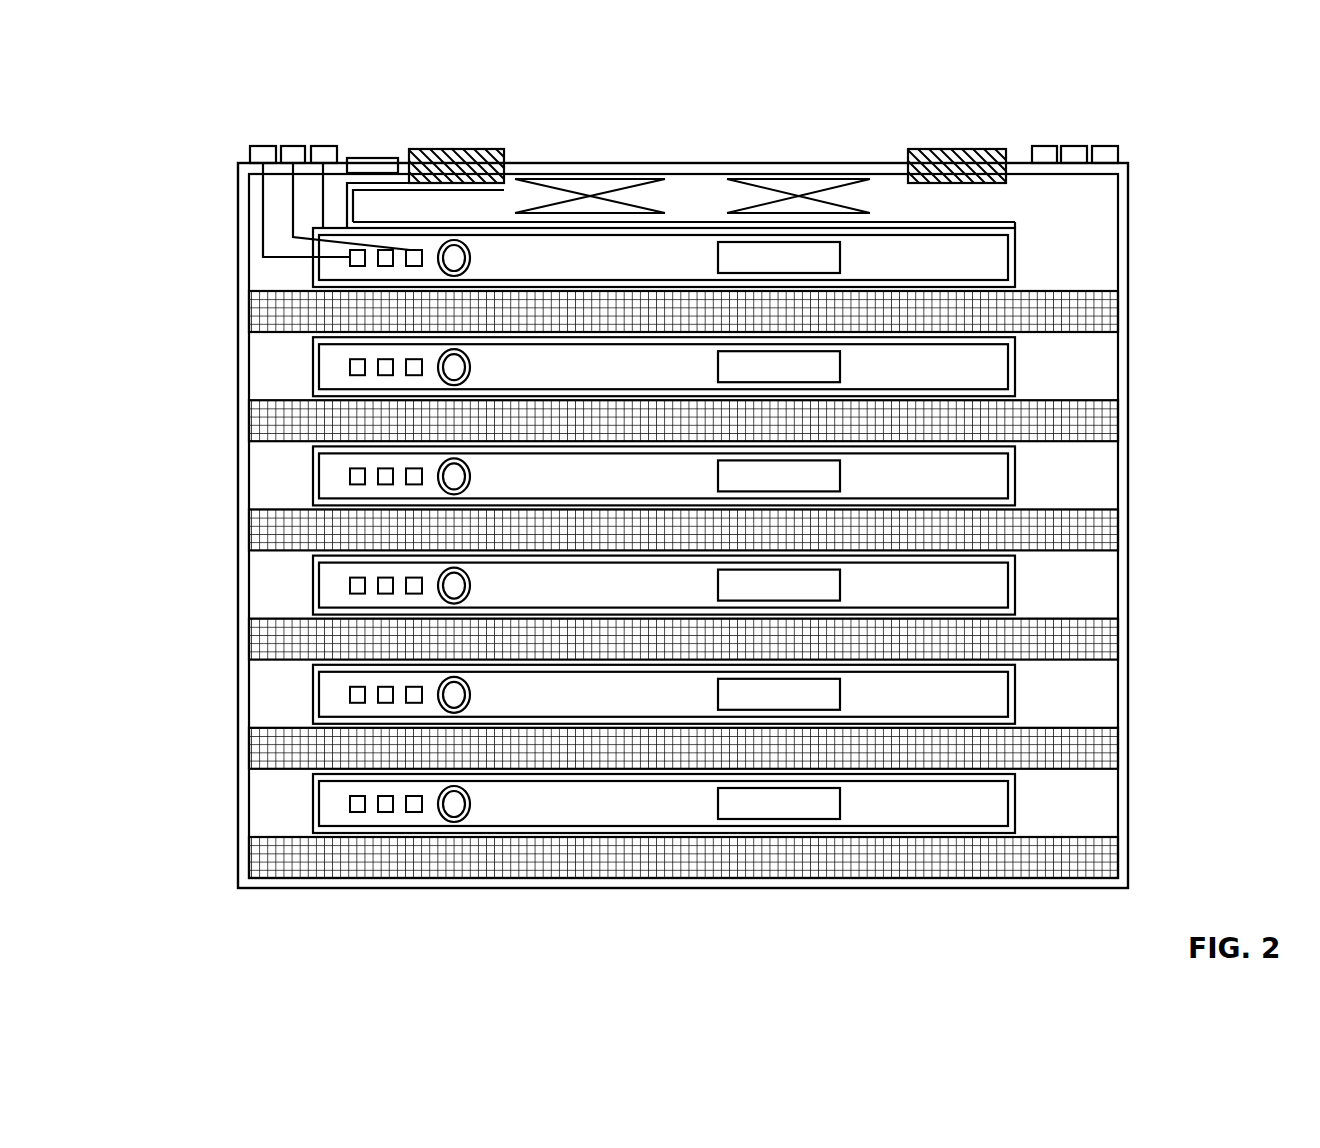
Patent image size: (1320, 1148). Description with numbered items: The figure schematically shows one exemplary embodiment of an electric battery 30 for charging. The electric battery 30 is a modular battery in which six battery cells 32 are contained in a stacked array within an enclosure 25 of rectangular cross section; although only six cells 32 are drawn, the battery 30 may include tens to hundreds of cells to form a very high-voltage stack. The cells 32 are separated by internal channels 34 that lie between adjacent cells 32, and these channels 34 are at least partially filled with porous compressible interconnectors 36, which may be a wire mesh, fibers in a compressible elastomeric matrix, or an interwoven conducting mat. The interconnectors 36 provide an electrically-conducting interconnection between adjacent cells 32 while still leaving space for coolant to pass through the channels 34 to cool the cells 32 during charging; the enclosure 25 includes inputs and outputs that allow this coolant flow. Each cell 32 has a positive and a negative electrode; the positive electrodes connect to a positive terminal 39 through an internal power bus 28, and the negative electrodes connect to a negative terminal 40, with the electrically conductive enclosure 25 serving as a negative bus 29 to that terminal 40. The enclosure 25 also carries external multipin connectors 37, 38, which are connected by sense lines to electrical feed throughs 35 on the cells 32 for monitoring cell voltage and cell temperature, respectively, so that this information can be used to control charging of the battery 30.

The enclosure 25 is at (238, 815).
The internal power bus 28 is at (963, 221).
The negative bus 29 is at (818, 163).
The electric battery 30 is at (202, 74).
The battery cells 32 is at (1150, 235).
The internal channels 34 is at (216, 309).
The electrical feed throughs 35 is at (357, 812).
The porous compressible interconnectors 36 is at (1107, 313).
The multipin connector 37 is at (249, 155).
The multipin connector 38 is at (337, 143).
The positive terminal 39 is at (462, 148).
The negative terminal 40 is at (963, 148).